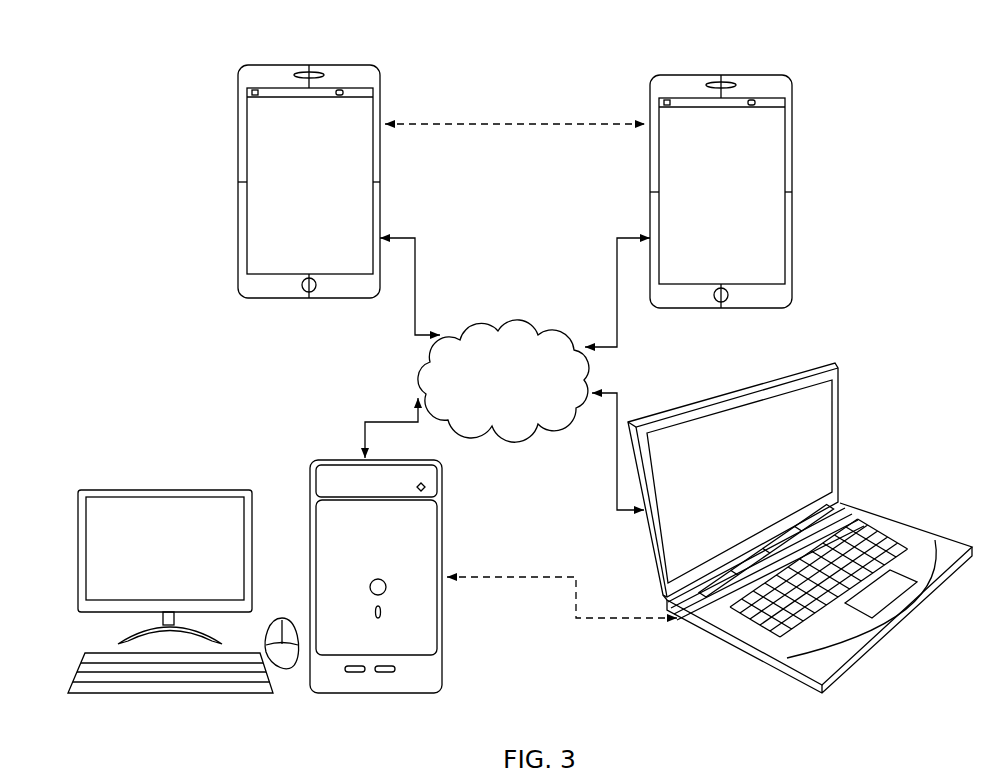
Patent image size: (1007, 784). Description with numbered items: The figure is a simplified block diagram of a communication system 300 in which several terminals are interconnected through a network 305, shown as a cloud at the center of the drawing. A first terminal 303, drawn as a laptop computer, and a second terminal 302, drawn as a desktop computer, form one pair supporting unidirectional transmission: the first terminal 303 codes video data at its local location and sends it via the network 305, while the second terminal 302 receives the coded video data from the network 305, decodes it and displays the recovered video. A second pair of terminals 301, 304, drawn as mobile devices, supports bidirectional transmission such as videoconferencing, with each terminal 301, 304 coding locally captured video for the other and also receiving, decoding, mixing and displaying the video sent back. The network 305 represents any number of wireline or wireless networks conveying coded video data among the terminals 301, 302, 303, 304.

The communication system 300 is at (103, 56).
The terminal 301 is at (235, 170).
The second terminal 302 is at (445, 660).
The first terminal 303 is at (642, 533).
The terminal 304 is at (648, 163).
The network 305 is at (508, 325).